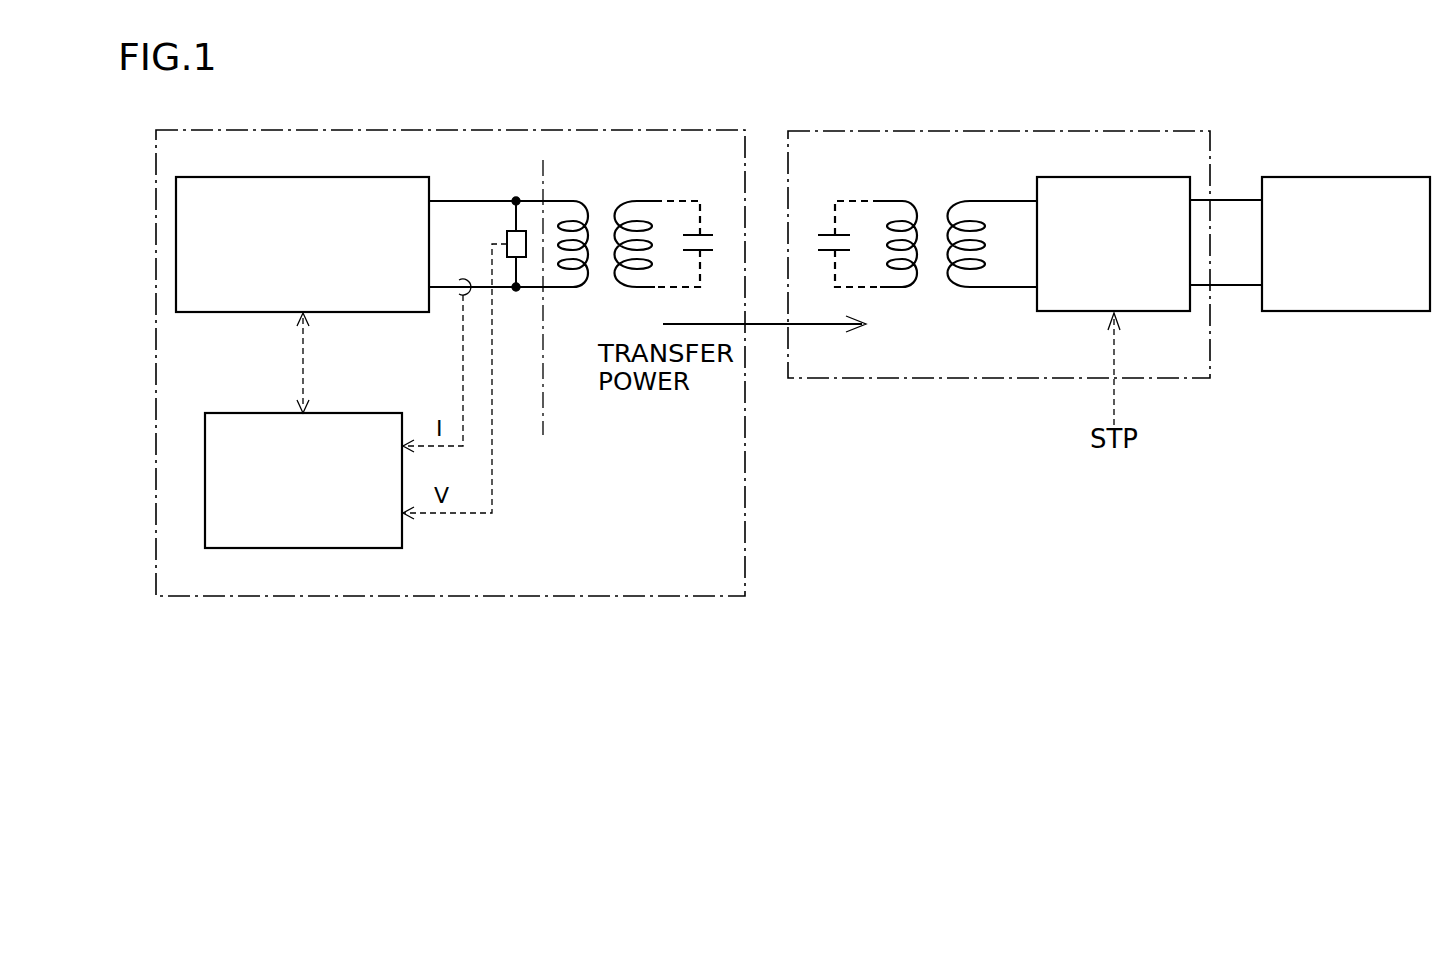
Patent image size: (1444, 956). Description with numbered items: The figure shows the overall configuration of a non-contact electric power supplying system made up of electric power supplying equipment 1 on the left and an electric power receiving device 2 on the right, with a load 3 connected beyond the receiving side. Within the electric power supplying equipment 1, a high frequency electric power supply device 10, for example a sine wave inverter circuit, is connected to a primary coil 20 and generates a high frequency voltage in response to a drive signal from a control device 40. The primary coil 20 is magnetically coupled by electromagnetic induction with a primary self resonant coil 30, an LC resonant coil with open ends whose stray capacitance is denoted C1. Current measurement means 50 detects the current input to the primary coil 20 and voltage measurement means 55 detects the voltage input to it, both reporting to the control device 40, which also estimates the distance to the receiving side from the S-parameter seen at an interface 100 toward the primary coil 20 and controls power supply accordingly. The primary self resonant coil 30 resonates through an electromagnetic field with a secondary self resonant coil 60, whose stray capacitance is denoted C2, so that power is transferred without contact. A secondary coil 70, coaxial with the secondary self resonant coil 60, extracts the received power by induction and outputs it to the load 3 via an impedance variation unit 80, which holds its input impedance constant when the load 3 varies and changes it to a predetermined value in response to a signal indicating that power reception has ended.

The electric power supplying equipment 1 is at (658, 130).
The electric power receiving device 2 is at (1080, 130).
The load 3 is at (1382, 177).
The high frequency electric power supply device 10 is at (348, 177).
The primary coil 20 is at (565, 290).
The primary self resonant coil 30 is at (638, 201).
The control device 40 is at (348, 413).
The current measurement means 50 is at (465, 278).
The voltage measurement means 55 is at (511, 230).
The secondary self resonant coil 60 is at (898, 201).
The secondary coil 70 is at (966, 290).
The impedance variation unit 80 is at (1125, 177).
The interface 100 is at (543, 418).
The stray capacitance of primary self resonant coil C1 is at (708, 230).
The stray capacitance of secondary self resonant coil C2 is at (822, 230).